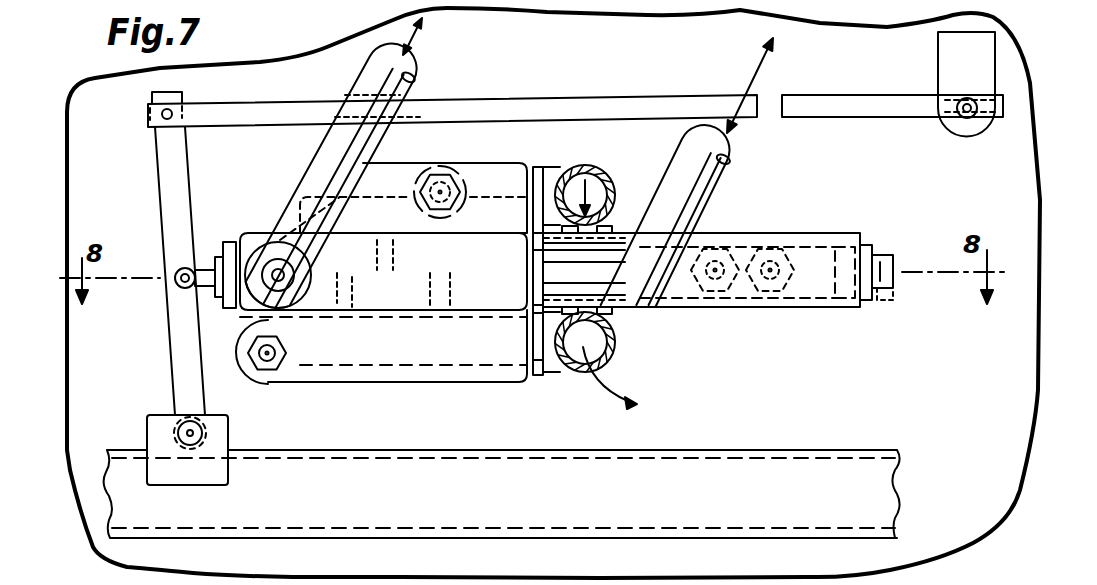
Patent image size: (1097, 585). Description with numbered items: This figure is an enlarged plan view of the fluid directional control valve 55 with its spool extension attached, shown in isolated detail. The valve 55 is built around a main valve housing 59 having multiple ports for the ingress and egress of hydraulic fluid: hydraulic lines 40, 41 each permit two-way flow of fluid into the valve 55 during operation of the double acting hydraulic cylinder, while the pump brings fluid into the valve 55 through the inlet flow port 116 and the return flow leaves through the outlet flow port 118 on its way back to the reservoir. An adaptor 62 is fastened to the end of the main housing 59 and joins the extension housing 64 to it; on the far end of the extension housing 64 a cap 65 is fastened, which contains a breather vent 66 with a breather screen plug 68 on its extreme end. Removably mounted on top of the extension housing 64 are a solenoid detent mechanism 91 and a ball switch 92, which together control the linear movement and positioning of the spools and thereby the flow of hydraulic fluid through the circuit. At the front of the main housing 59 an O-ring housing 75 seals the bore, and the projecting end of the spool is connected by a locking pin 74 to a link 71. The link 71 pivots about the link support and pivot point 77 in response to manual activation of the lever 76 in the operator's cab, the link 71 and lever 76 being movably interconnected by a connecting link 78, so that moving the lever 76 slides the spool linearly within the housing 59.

The hydraulic line 40 is at (421, 82).
The hydraulic line 41 is at (738, 165).
The fluid directional control valve 55 is at (483, 163).
The main valve housing 59 is at (513, 163).
The adaptor 62 is at (603, 308).
The extension housing 64 is at (712, 307).
The cap 65 is at (866, 244).
The breather vent 66 is at (893, 300).
The breather screen plug 68 is at (893, 262).
The link 71 is at (157, 166).
The locking pin 74 is at (185, 283).
The O-ring housing 75 is at (237, 245).
The lever 76 is at (938, 62).
The link support and pivot point 77 is at (183, 433).
The connecting link 78 is at (652, 96).
The solenoid detent mechanism 91 is at (716, 235).
The ball switch 92 is at (783, 243).
The inlet flow port 116 is at (600, 180).
The outlet flow port 118 is at (608, 362).